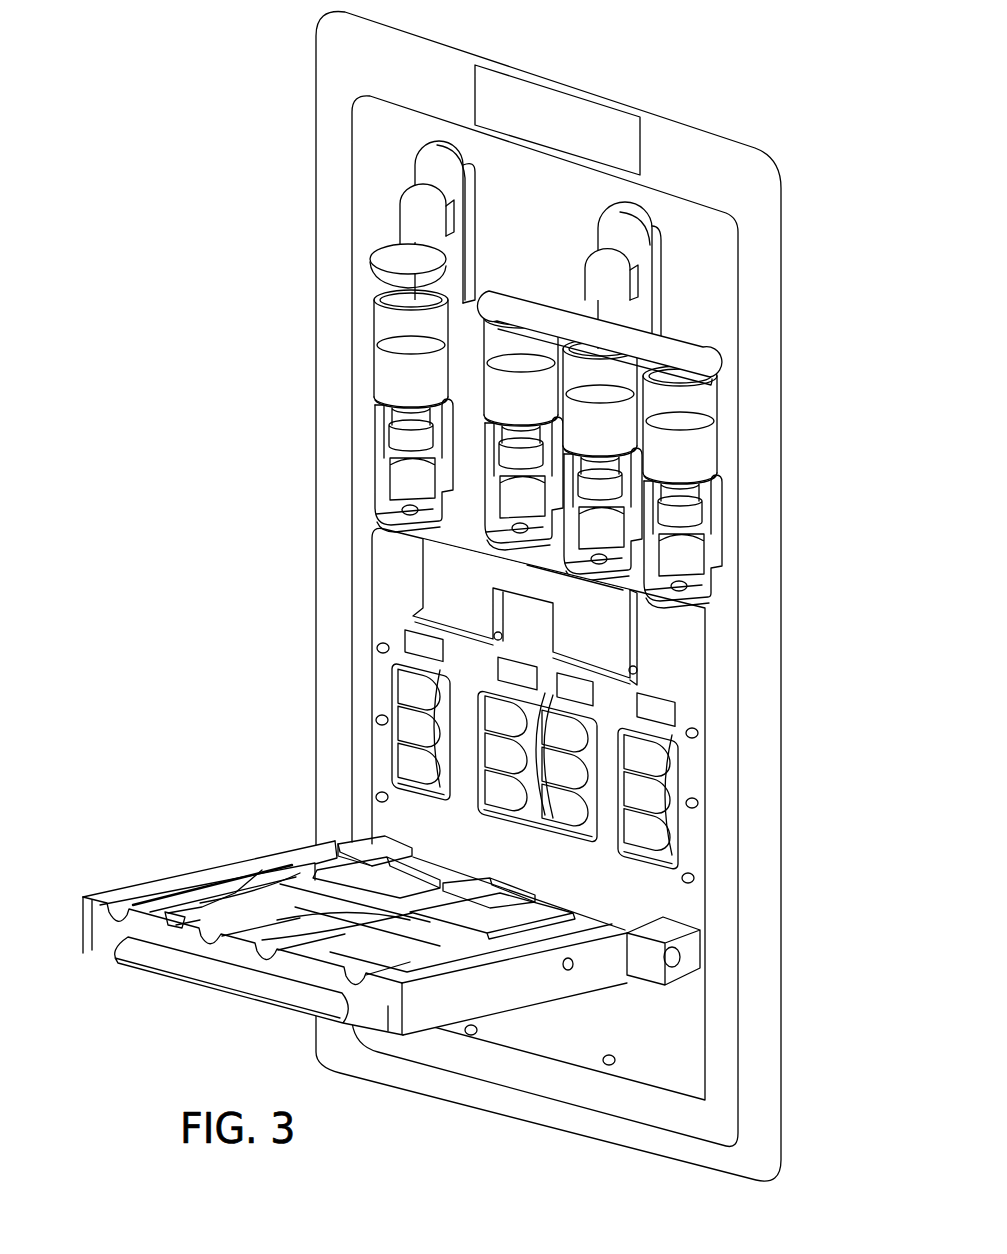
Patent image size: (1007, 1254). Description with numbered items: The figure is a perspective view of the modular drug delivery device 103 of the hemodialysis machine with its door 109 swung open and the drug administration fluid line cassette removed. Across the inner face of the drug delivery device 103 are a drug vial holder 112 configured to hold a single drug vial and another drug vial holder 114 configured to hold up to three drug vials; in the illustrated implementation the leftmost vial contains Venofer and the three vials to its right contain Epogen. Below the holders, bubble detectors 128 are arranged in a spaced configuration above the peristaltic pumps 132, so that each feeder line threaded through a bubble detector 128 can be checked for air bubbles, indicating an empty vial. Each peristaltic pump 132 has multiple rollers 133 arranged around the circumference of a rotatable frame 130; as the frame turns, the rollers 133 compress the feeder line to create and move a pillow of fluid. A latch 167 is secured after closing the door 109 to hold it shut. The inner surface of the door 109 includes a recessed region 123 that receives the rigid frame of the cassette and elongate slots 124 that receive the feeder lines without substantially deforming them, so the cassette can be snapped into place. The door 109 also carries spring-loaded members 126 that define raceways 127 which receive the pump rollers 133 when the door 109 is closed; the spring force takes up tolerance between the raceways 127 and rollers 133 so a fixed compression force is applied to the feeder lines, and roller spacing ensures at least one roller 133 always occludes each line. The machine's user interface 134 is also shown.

The modular drug delivery device 103 is at (742, 328).
The user interface 134 is at (631, 137).
The drug vial holder 112 is at (413, 155).
The drug vial holder 114 is at (596, 222).
The latch 167 is at (435, 575).
The bubble detector 128 is at (664, 696).
The rotatable frame 130 is at (613, 862).
The peristaltic pump 132 is at (680, 787).
The roller 133 is at (655, 757).
The door 109 is at (103, 948).
The recessed region 123 is at (260, 868).
The raceway 127 is at (233, 895).
The elongate slot 124 is at (123, 913).
The spring-loaded member 126 is at (176, 922).